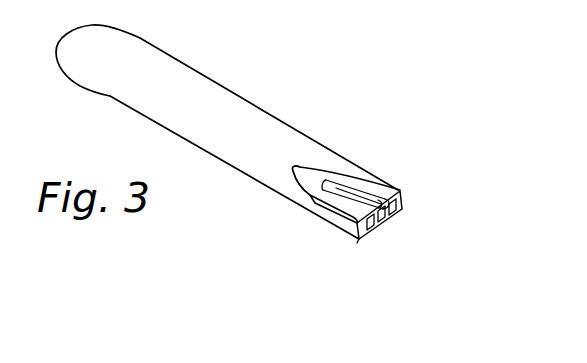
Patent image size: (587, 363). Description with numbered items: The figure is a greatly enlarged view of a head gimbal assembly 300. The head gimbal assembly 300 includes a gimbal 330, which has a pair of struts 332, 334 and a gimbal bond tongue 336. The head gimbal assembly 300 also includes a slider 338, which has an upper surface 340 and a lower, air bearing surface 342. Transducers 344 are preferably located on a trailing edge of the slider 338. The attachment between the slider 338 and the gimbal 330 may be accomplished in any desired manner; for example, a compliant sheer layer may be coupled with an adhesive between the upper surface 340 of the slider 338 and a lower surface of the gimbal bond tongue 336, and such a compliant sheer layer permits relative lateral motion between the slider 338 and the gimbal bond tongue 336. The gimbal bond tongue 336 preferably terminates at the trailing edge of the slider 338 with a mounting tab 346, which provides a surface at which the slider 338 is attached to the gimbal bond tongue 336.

The head gimbal assembly 300 is at (227, 120).
The gimbal 330 is at (178, 58).
The strut 332 is at (314, 206).
The strut 334 is at (360, 183).
The gimbal bond tongue 336 is at (400, 191).
The slider 338 is at (402, 242).
The upper surface 340 is at (365, 195).
The air bearing surface 342 is at (357, 242).
The transducers 344 is at (382, 233).
The mounting tab 346 is at (327, 184).